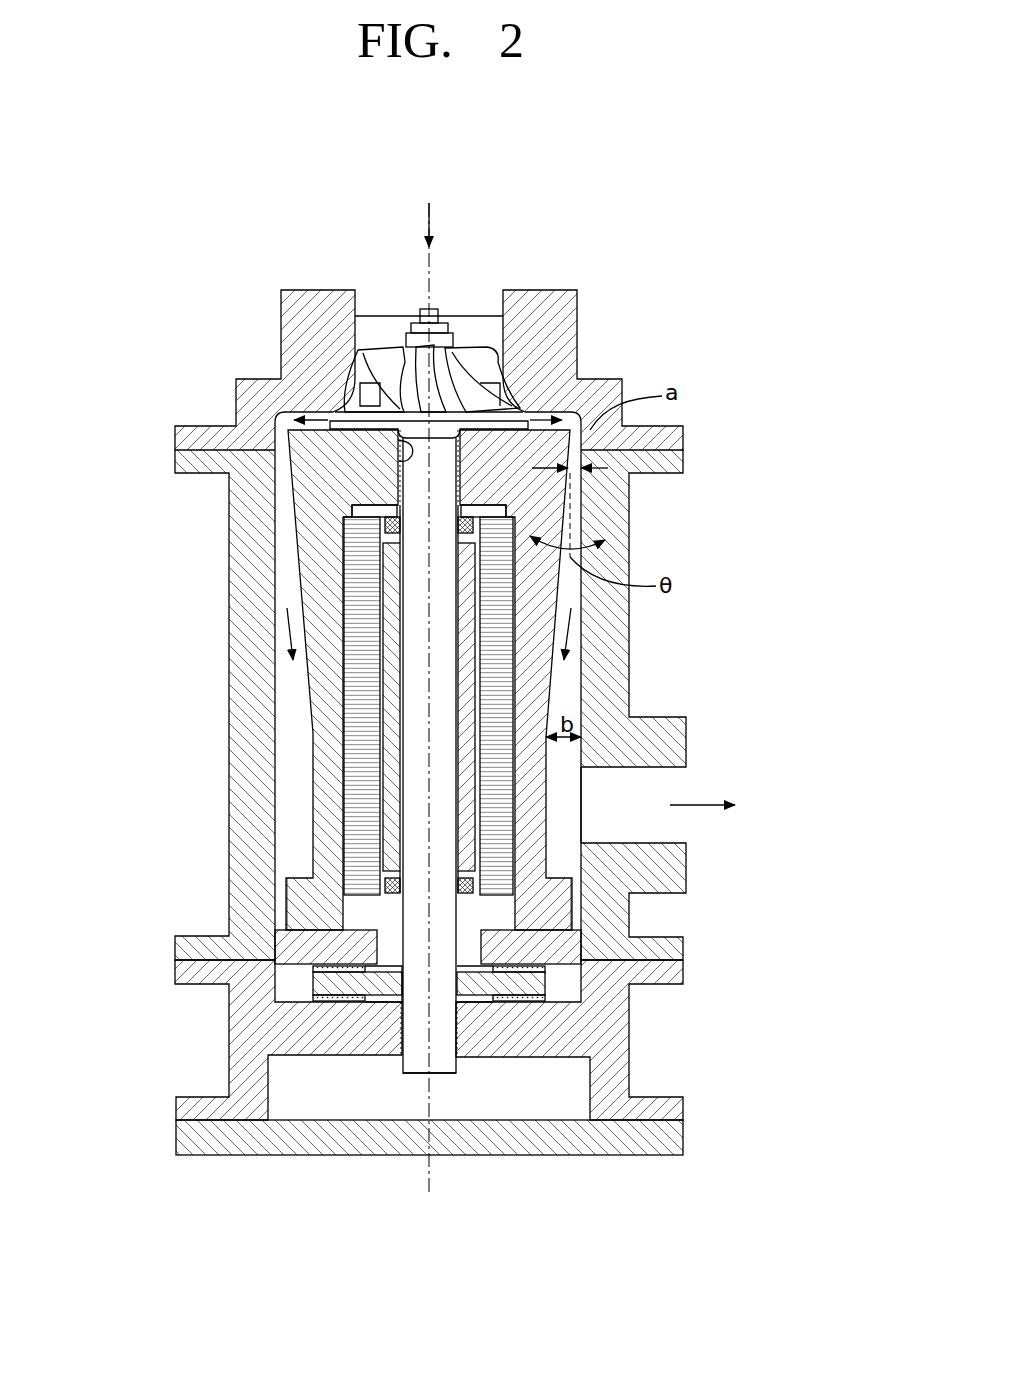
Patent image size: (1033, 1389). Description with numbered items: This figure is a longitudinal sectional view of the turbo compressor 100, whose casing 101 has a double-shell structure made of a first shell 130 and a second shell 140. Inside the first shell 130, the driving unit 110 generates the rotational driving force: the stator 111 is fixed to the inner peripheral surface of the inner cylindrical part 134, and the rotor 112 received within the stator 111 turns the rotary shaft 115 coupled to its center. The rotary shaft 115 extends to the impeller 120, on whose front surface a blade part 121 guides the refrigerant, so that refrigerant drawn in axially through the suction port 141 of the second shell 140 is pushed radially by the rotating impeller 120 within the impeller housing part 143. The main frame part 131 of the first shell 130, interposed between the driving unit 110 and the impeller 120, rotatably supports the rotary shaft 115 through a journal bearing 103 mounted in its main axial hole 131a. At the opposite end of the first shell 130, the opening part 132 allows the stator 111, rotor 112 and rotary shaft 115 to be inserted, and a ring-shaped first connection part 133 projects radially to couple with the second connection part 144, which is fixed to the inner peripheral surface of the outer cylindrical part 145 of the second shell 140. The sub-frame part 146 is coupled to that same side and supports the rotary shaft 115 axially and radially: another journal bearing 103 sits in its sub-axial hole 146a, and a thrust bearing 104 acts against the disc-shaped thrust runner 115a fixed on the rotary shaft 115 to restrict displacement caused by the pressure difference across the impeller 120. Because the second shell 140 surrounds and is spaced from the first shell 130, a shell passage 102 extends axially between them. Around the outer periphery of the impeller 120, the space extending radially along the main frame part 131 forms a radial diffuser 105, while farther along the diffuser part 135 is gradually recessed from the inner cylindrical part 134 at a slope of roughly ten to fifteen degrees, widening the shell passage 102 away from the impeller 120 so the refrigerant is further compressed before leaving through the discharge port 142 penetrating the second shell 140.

The turbo compressor 100 is at (200, 266).
The casing 101 is at (127, 678).
The shell passage 102 is at (279, 556).
The journal bearing 103 is at (397, 488).
The thrust bearing 104 is at (545, 998).
The radial diffuser 105 is at (581, 443).
The driving unit 110 is at (135, 780).
The stator 111 is at (350, 805).
The rotor 112 is at (388, 832).
The rotary shaft 115 is at (417, 862).
The thrust runner 115a is at (343, 985).
The impeller 120 is at (496, 327).
The blade part 121 is at (477, 360).
The first shell 130 is at (421, 680).
The main frame part 131 is at (497, 487).
The main axial hole 131a is at (398, 441).
The opening part 132 is at (493, 916).
The first connection part 133 is at (297, 908).
The inner cylindrical part 134 is at (542, 693).
The diffuser part 135 is at (560, 603).
The second shell 140 is at (458, 661).
The suction port 141 is at (382, 334).
The discharge port 142 is at (656, 829).
The impeller housing part 143 is at (541, 300).
The second connection part 144 is at (296, 963).
The outer cylindrical part 145 is at (622, 657).
The sub-frame part 146 is at (623, 1040).
The sub-axial hole 146a is at (402, 1042).